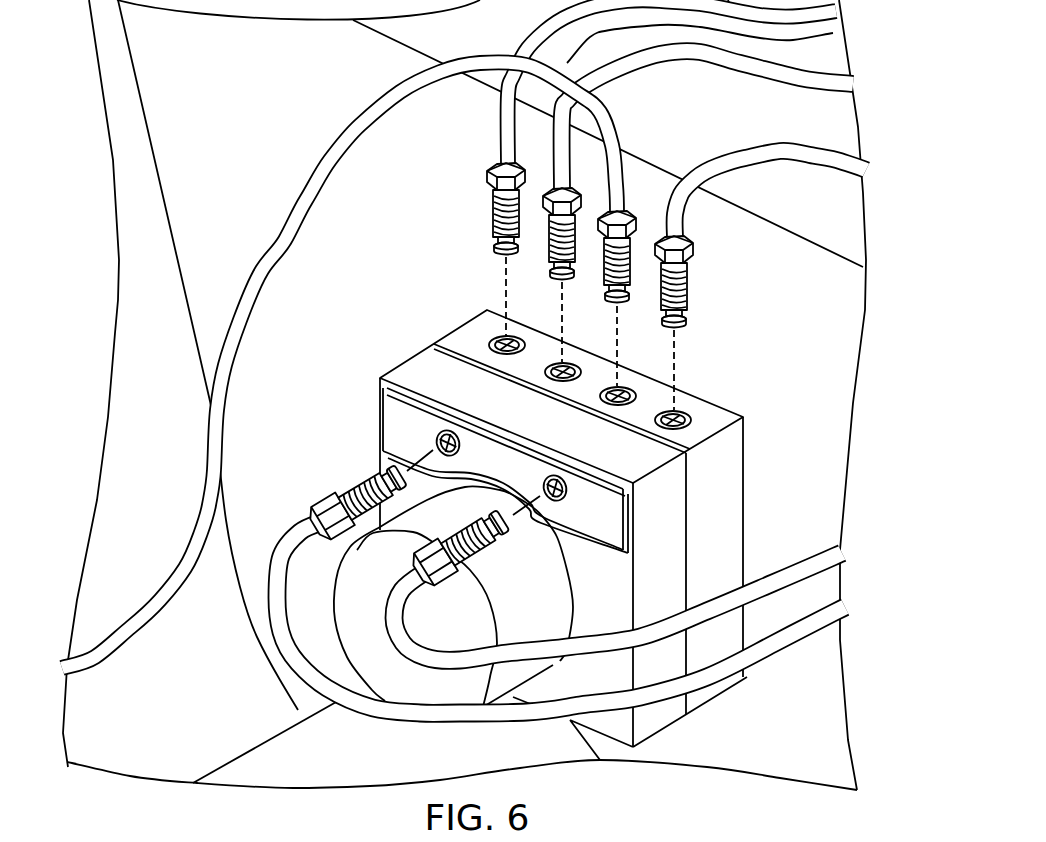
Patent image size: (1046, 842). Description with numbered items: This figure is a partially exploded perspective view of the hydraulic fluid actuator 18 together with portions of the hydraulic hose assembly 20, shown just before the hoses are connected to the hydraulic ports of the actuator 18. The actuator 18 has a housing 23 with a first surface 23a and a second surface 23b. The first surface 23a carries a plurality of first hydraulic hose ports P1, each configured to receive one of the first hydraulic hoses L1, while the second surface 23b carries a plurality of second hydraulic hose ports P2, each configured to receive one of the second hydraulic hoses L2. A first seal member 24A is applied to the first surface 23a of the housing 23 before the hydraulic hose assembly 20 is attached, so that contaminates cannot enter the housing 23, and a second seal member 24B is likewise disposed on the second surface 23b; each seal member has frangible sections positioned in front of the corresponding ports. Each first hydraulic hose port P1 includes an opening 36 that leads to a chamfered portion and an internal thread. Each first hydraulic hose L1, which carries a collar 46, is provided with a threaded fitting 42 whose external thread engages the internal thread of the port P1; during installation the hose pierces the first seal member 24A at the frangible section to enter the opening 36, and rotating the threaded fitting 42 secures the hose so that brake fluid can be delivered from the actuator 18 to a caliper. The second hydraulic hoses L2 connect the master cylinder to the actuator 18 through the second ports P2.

The hydraulic fluid actuator 18 is at (464, 373).
The hydraulic hose assembly 20 is at (736, 272).
The housing 23 is at (560, 502).
The first surface 23a is at (579, 370).
The second surface 23b is at (461, 495).
The first seal member 24A is at (452, 317).
The second seal member 24B is at (368, 410).
The opening 36 is at (560, 378).
The threaded fitting 42 is at (587, 233).
The collar 46 is at (523, 165).
The first hydraulic hose L1 is at (312, 172).
The second hydraulic hose L2 is at (780, 567).
The first hydraulic hose port P1 is at (557, 367).
The second hydraulic hose port P2 is at (455, 446).